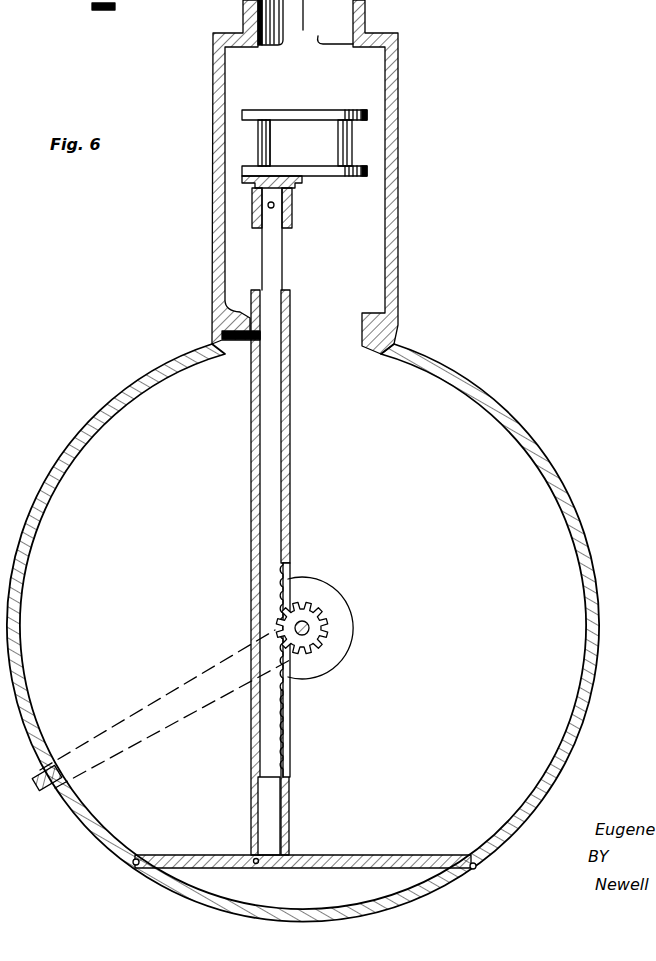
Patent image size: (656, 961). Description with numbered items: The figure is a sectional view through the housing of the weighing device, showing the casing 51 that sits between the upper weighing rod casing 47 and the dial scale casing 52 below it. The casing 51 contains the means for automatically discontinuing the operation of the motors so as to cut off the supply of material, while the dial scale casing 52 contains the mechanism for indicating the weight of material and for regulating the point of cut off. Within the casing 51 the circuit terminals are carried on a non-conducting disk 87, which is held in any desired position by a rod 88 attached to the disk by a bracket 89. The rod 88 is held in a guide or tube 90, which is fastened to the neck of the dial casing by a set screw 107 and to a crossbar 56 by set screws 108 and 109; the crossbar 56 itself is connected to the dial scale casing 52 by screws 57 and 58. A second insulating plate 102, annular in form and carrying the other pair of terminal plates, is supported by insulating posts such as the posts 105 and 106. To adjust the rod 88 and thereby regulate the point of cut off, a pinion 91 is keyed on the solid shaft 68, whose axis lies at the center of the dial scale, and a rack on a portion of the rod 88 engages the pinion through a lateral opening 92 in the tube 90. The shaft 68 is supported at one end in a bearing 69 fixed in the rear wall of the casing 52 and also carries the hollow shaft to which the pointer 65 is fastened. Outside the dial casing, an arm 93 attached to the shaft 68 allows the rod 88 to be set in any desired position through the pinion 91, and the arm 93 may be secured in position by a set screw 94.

The upper casing 47 is at (243, 16).
The casing 51 is at (392, 236).
The dial scale casing 52 is at (590, 531).
The crossbar 56 is at (388, 855).
The screw 57 is at (134, 866).
The screw 58 is at (477, 866).
The pointer 65 is at (512, 0).
The solid shaft 68 is at (309, 628).
The bearing 69 is at (335, 652).
The disk 87 is at (372, 170).
The rod 88 is at (276, 254).
The bracket 89 is at (252, 204).
The guide or tube 90 is at (291, 490).
The pinion 91 is at (318, 613).
The lateral opening 92 is at (288, 574).
The arm 93 is at (180, 682).
The set screw 94 is at (103, 10).
The insulating plate 102 is at (372, 115).
The insulating post 105 is at (262, 150).
The insulating post 106 is at (354, 145).
The set screw 107 is at (222, 334).
The set screw 108 is at (250, 855).
The set screw 109 is at (292, 855).